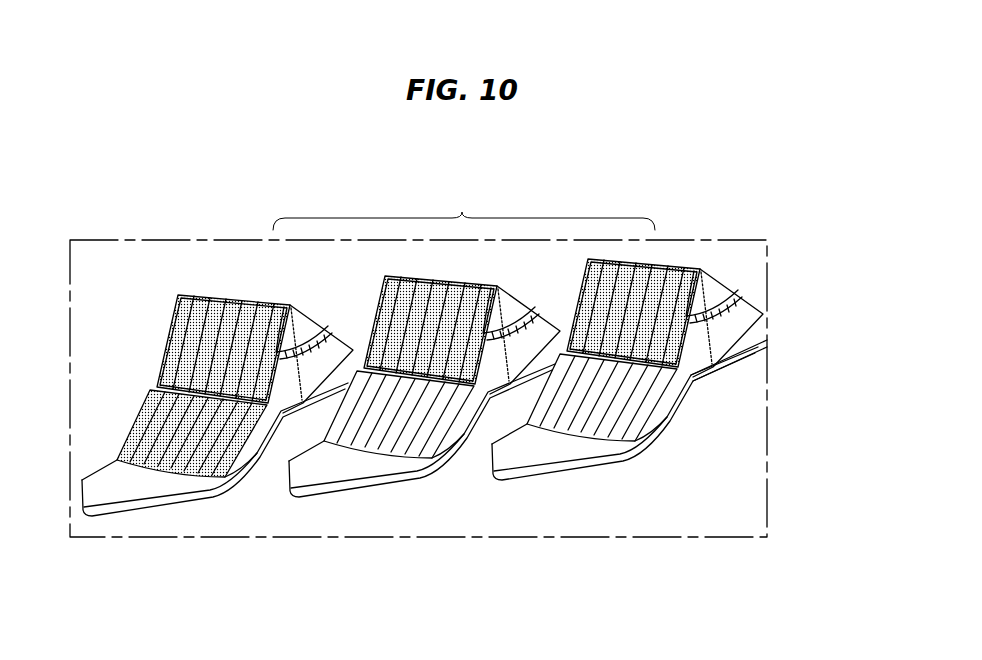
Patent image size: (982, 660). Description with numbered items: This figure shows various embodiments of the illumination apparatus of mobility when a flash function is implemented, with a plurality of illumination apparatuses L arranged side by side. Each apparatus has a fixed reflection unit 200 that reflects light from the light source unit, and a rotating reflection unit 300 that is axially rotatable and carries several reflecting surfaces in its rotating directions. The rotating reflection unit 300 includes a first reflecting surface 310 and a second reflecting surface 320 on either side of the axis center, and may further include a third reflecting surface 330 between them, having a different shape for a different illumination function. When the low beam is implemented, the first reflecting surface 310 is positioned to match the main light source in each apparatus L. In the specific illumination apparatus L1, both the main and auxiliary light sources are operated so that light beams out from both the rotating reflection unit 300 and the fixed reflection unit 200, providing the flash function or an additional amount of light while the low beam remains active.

The first reflecting surface 310 is at (185, 327).
The second reflecting surface 320 is at (308, 312).
The third reflecting surface 330 is at (301, 403).
The rotating reflection unit 300 is at (747, 300).
The fixed reflection unit 200 is at (653, 445).
The specific illumination apparatus L1 is at (185, 477).
The illumination apparatuses L is at (464, 204).